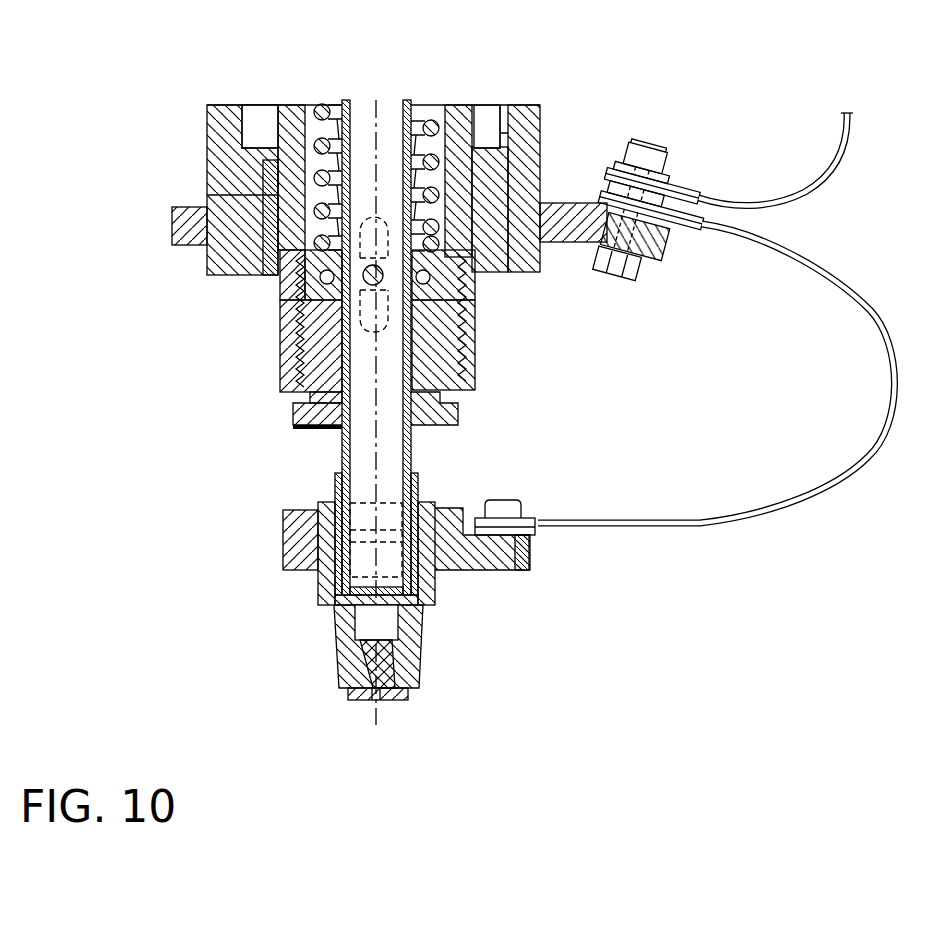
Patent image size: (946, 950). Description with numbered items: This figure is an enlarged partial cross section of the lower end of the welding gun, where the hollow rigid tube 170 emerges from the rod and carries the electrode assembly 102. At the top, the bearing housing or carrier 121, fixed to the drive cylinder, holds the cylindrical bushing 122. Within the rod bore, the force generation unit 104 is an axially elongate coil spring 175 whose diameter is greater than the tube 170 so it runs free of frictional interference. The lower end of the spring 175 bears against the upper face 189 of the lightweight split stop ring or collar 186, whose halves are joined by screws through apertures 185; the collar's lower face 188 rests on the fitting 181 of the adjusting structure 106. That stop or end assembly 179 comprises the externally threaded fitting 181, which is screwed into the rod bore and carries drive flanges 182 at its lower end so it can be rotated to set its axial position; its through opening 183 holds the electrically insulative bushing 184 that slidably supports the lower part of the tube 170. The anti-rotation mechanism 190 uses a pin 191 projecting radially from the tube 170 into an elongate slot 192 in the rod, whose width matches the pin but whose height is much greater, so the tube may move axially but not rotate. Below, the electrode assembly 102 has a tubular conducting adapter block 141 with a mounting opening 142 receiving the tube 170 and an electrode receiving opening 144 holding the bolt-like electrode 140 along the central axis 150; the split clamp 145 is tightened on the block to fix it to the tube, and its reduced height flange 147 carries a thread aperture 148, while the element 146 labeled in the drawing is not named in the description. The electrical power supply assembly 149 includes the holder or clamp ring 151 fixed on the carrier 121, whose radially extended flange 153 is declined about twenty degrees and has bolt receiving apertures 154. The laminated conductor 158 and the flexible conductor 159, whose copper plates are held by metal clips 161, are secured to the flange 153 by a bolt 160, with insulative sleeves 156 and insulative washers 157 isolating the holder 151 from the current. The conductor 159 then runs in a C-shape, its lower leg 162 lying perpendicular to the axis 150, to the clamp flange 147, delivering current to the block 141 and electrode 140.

The electrode assembly 102 is at (313, 642).
The force generation unit 104 is at (347, 100).
The adjusting structure 106 is at (487, 405).
The bearing housing or carrier 121 is at (207, 108).
The cylindrical bushing 122 is at (265, 165).
The electrode 140 is at (362, 700).
The adapter block 141 is at (320, 596).
The mounting opening 142 is at (352, 503).
The electrode receiving opening 144 is at (420, 678).
The split clamp 145 is at (283, 520).
The tube wall 146 is at (411, 487).
The flange 147 is at (530, 555).
The thread aperture 148 is at (503, 572).
The electrical power supply assembly 149 is at (730, 167).
The central axis 150 is at (380, 715).
The holder or clamp ring 151 is at (548, 203).
The radially extended flange 153 is at (635, 288).
The bolt receiving apertures 154 is at (640, 272).
The insulative sleeves 156 is at (598, 245).
The insulative washers 157 is at (597, 195).
The electrical conductor 158 is at (853, 113).
The flexible electrical conductor 159 is at (868, 298).
The bolt 160 is at (605, 290).
The metal caps or clips 161 is at (702, 200).
The lower leg 162 is at (560, 516).
The hollow rigid tube 170 is at (420, 120).
The spring 175 is at (318, 110).
The stop or end assembly 179 is at (300, 432).
The fitting 181 is at (335, 399).
The drive flanges 182 is at (293, 415).
The through opening 183 is at (412, 400).
The bushing 184 is at (463, 378).
The apertures 185 is at (322, 278).
The split stop ring or collar 186 is at (280, 256).
The lower face 188 is at (335, 316).
The upper face 189 is at (275, 197).
The anti-rotation mechanism 190 is at (305, 320).
The pin 191 is at (295, 335).
The slot 192 is at (455, 320).